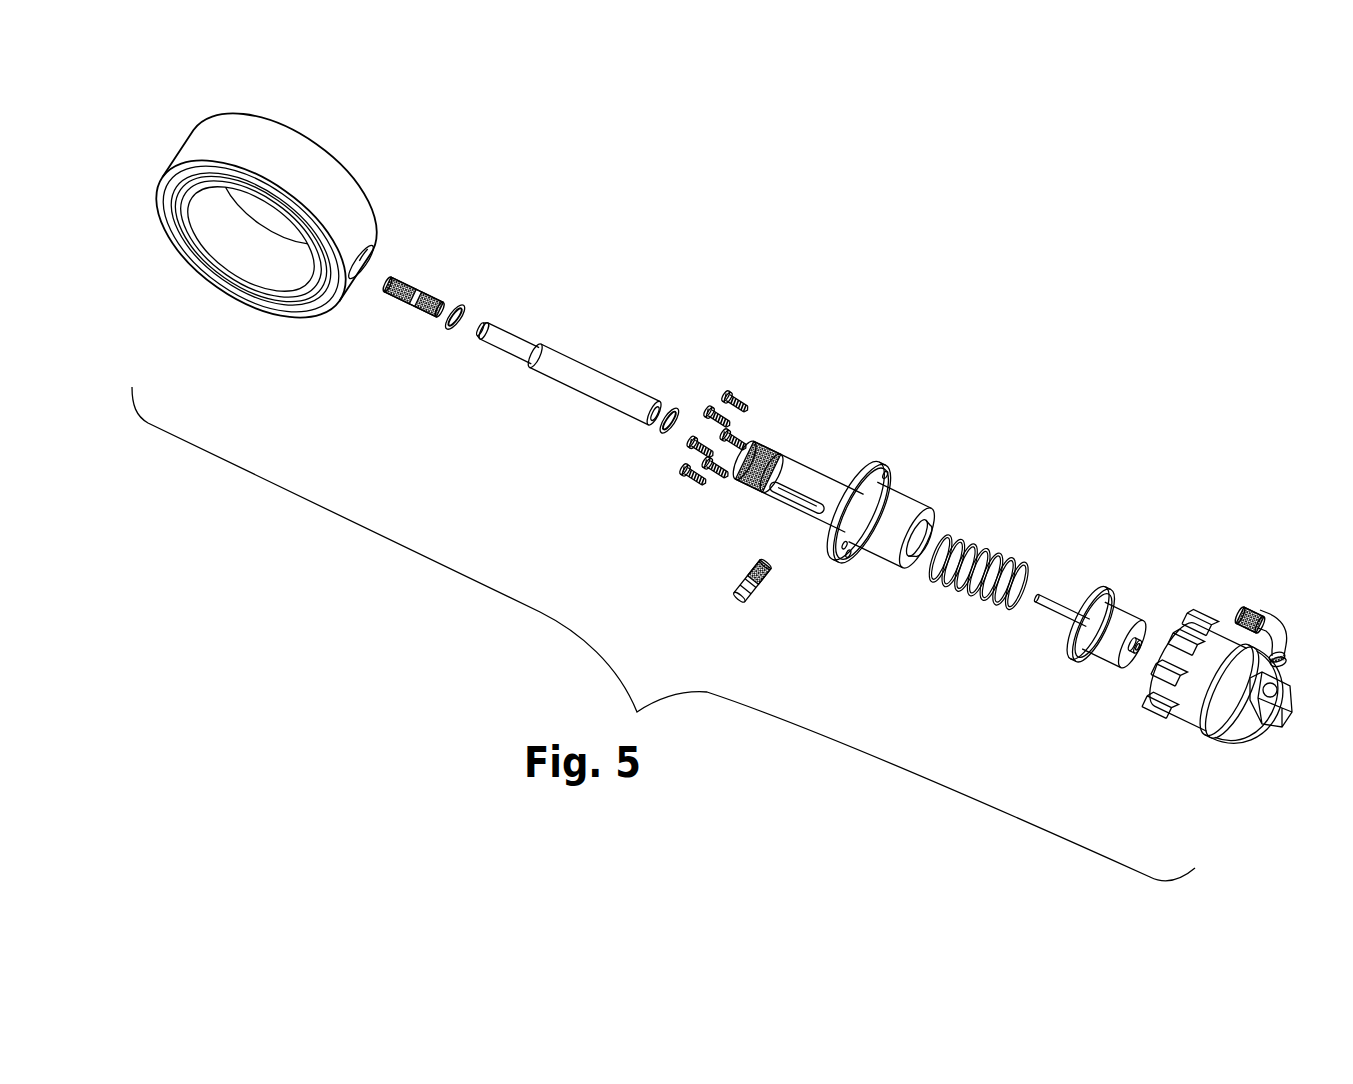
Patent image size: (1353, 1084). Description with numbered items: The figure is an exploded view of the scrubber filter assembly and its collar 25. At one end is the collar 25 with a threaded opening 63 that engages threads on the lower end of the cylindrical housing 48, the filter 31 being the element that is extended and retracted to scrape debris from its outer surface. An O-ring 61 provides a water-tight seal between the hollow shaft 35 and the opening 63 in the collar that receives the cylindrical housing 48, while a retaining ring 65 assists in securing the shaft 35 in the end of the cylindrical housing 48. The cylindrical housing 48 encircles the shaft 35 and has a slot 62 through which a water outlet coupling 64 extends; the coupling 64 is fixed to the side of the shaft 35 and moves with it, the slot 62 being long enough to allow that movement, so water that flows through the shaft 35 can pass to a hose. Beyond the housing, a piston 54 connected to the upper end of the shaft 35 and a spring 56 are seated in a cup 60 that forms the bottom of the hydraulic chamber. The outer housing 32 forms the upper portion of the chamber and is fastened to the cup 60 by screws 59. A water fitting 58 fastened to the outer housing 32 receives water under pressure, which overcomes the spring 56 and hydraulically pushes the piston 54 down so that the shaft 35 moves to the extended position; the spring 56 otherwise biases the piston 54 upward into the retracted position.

The collar 25 is at (196, 144).
The threaded opening 63 is at (370, 253).
The filter 31 is at (410, 298).
The O-ring 61 is at (447, 325).
The hollow shaft 35 is at (615, 398).
The retaining ring 65 is at (662, 430).
The screws 59 is at (712, 393).
The cylindrical housing 48 is at (808, 470).
The slot 62 is at (805, 503).
The cup 60 is at (876, 553).
The water outlet coupling 64 is at (758, 590).
The spring 56 is at (982, 596).
The piston 54 is at (1097, 655).
The outer housing 32 is at (1190, 712).
The water fitting 58 is at (1262, 640).